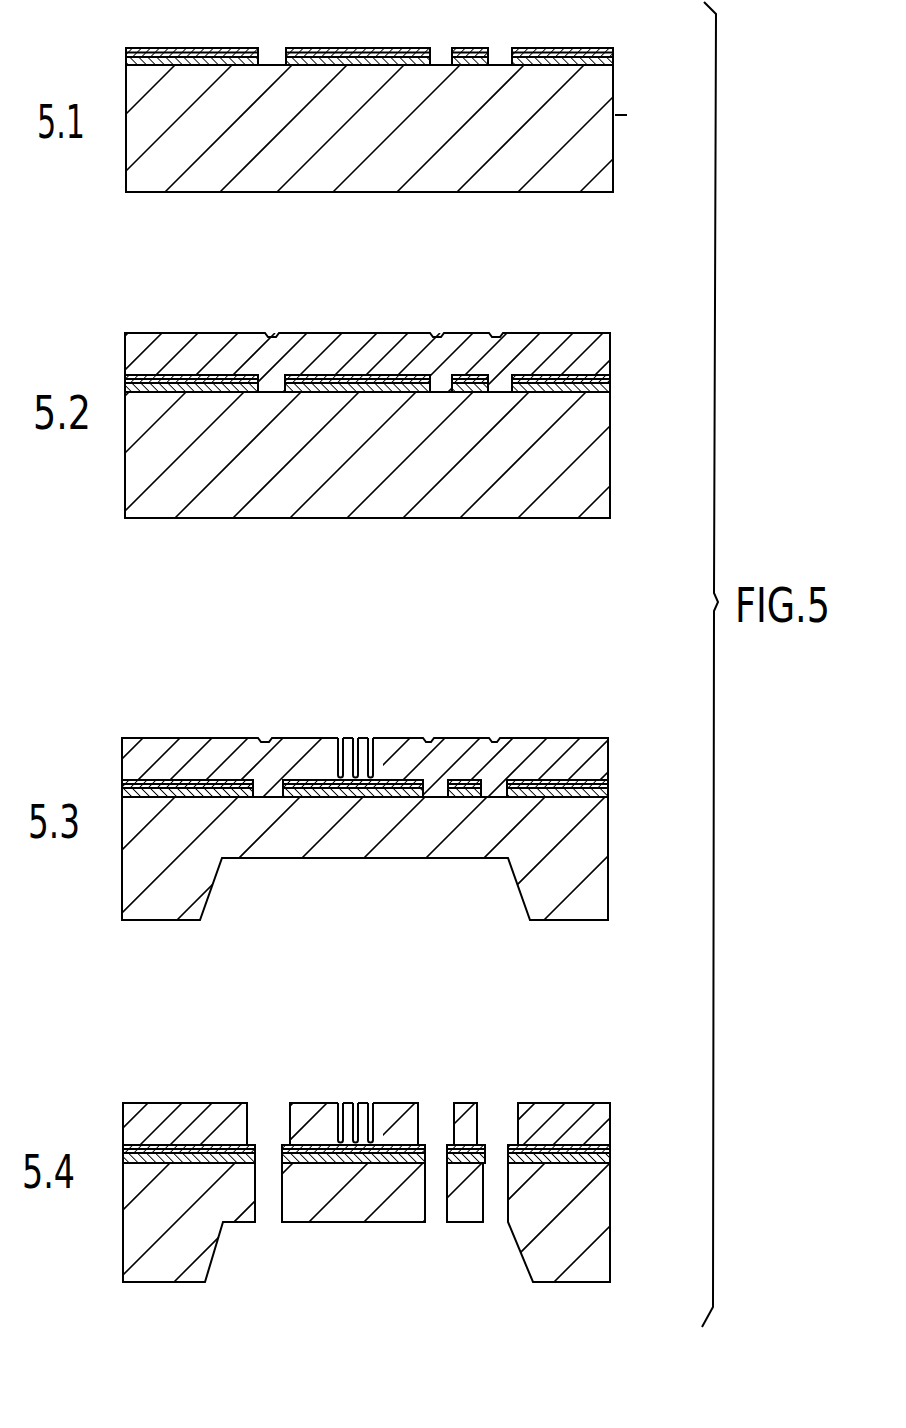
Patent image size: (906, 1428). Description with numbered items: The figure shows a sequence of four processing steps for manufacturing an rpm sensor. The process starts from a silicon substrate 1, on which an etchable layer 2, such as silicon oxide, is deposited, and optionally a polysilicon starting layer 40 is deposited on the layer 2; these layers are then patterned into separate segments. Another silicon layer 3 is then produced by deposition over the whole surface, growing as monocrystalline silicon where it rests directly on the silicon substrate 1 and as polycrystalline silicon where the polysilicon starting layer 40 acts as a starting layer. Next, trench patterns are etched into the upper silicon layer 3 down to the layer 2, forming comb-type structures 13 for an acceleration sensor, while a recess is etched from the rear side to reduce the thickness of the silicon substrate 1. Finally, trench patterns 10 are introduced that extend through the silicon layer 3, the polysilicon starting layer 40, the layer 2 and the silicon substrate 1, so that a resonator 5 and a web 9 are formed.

The silicon substrate 1 is at (600, 147).
The etchable layer 2 is at (615, 62).
The polysilicon starting layer 40 is at (615, 47).
The silicon layer 3 is at (598, 353).
The comb-type structures 13 is at (363, 720).
The trench patterns 10 is at (267, 1112).
The resonator 5 is at (362, 1240).
The web 9 is at (475, 1235).